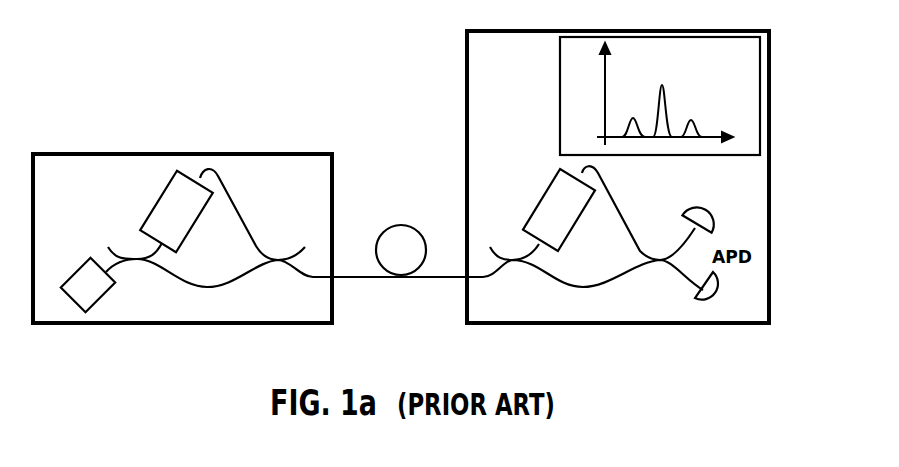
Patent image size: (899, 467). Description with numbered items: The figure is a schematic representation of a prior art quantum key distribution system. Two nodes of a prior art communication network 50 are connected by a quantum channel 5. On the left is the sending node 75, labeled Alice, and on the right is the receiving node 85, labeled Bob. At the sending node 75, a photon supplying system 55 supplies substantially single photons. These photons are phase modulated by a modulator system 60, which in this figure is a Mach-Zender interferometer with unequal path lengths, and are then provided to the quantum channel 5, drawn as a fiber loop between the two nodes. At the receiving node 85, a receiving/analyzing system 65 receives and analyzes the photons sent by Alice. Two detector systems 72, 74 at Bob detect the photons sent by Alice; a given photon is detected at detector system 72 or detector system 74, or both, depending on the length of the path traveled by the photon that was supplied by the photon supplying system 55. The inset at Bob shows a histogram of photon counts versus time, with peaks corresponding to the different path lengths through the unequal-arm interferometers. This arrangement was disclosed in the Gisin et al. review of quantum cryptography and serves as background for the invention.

The quantum channel 5 is at (402, 224).
The communication network 50 is at (771, 135).
The photon supplying system 55 is at (73, 275).
The modulator system 60 is at (167, 188).
The receiving/analyzing system 65 is at (538, 203).
The detector system 72 is at (713, 210).
The detector system 74 is at (719, 295).
The sending node 75 is at (227, 323).
The receiving node 85 is at (680, 31).